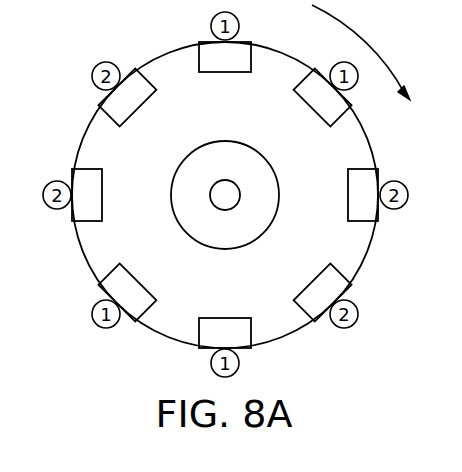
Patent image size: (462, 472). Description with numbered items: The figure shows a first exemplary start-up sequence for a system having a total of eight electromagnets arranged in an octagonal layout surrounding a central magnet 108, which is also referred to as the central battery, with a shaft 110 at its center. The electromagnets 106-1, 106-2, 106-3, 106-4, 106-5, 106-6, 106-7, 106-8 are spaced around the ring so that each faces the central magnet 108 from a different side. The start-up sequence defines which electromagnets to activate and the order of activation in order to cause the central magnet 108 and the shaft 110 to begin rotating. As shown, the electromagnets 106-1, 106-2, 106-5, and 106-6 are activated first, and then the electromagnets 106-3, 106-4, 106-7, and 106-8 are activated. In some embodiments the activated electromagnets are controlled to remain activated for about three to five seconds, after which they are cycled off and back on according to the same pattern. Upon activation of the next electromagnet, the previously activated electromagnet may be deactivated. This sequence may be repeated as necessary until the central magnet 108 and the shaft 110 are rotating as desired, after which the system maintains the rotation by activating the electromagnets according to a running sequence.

The electromagnet 106-1 is at (225, 72).
The electromagnet 106-2 is at (309, 109).
The electromagnet 106-3 is at (346, 197).
The electromagnet 106-4 is at (309, 275).
The electromagnet 106-5 is at (226, 320).
The electromagnet 106-6 is at (140, 278).
The electromagnet 106-7 is at (102, 198).
The electromagnet 106-8 is at (139, 109).
The central magnet 108 is at (212, 249).
The shaft 110 is at (223, 180).